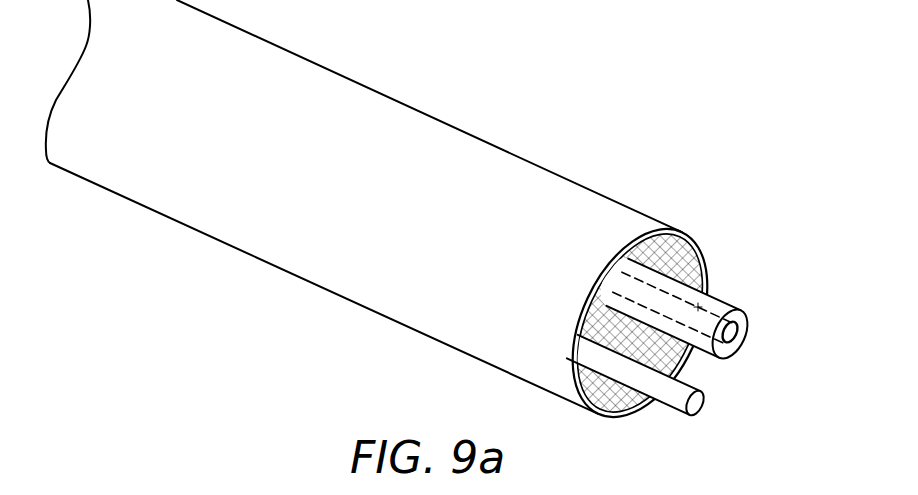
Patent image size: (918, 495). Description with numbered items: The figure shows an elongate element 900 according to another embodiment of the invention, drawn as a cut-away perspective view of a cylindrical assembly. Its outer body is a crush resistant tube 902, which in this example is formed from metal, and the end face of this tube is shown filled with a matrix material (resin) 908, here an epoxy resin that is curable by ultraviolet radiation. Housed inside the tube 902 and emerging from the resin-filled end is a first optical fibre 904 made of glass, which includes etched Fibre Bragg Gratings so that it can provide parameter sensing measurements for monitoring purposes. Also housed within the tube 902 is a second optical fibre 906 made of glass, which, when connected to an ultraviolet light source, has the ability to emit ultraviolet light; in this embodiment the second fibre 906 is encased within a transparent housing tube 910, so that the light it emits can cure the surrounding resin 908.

The elongate element 900 is at (423, 229).
The crush resistant tube 902 is at (527, 161).
The first optical fibre 904 is at (663, 400).
The second optical fibre 906 is at (718, 290).
The matrix material (resin) 908 is at (597, 322).
The transparent housing tube 910 is at (742, 347).